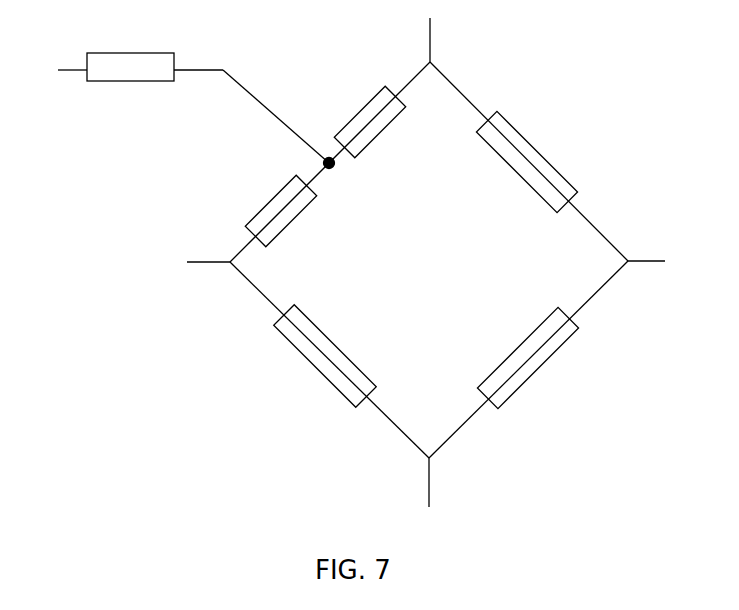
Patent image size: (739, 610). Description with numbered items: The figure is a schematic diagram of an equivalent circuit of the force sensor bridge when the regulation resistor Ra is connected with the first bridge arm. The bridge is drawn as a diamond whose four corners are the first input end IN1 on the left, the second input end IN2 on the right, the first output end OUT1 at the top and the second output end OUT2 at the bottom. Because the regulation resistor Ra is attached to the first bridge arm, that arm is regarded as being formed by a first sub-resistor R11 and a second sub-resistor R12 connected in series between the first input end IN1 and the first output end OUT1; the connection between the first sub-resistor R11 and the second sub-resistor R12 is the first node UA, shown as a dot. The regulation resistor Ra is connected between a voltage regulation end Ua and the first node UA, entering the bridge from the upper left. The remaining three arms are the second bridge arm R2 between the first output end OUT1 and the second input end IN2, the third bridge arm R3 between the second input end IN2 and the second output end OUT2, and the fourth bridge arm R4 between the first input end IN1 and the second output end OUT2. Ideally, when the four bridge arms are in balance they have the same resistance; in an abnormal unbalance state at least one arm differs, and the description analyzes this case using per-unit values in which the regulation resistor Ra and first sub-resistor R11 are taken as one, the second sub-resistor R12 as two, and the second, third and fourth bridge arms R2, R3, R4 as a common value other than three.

The regulation resistor Ra is at (208, 93).
The voltage regulation end Ua is at (58, 57).
The first node UA is at (305, 161).
The first sub-resistor R11 is at (293, 210).
The second sub-resistor R12 is at (376, 127).
The second bridge arm R2 is at (526, 161).
The third bridge arm R3 is at (527, 357).
The fourth bridge arm R4 is at (325, 356).
The first input end IN1 is at (208, 250).
The second input end IN2 is at (646, 248).
The first output end OUT1 is at (465, 40).
The second output end OUT2 is at (462, 482).